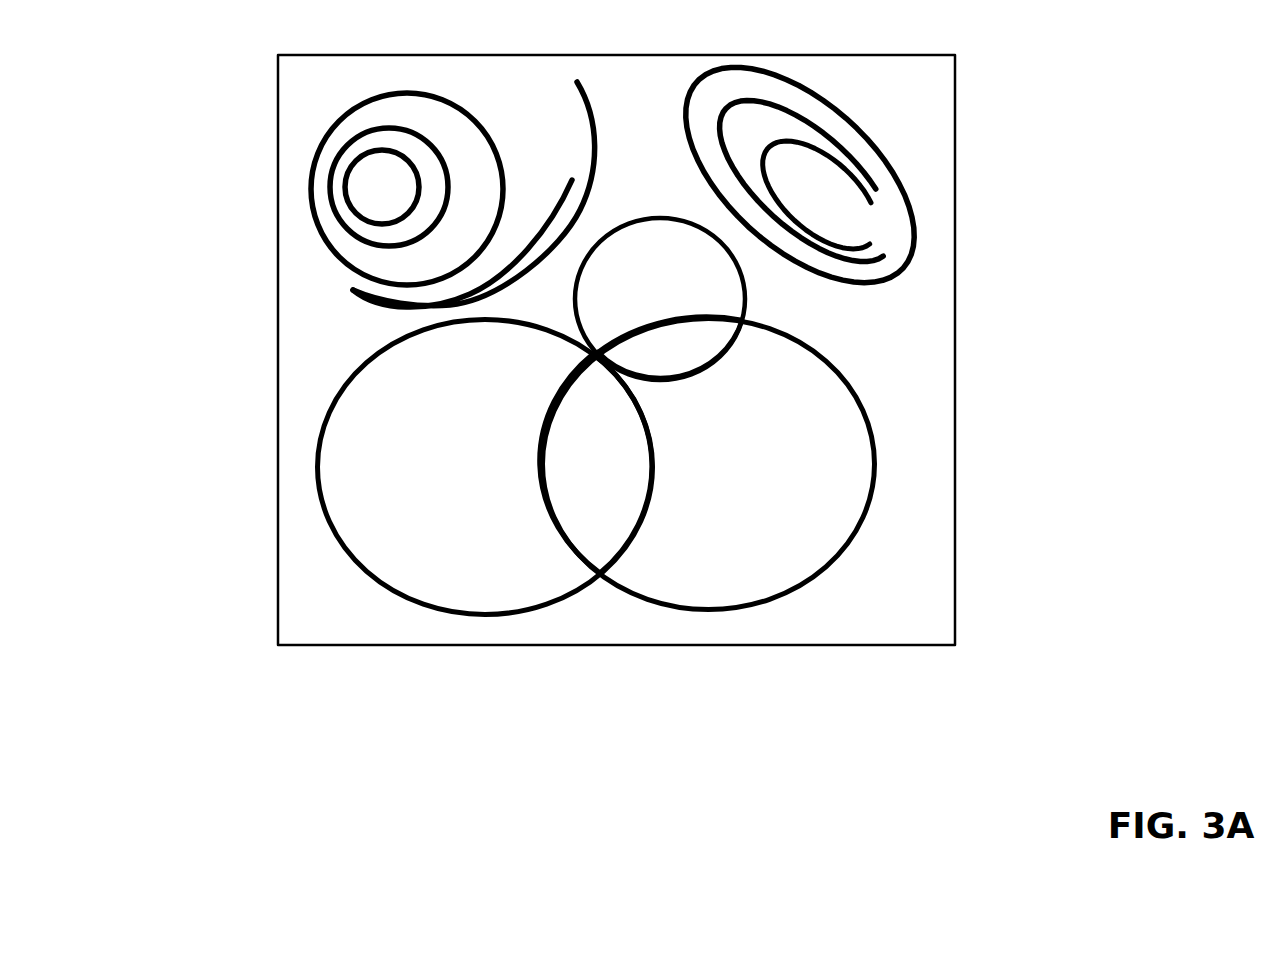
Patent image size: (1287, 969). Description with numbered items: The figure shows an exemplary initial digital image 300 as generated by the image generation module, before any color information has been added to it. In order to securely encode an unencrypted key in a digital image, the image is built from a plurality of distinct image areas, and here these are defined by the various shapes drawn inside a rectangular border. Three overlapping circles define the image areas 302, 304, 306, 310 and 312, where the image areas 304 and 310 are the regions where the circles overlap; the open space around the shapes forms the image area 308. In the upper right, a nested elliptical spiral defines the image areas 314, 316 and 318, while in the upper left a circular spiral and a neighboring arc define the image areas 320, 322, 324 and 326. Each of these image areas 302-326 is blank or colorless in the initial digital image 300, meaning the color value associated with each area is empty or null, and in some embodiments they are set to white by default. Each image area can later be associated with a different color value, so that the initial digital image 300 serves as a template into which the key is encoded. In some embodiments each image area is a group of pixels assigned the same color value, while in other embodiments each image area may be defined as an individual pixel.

The initial digital image 300 is at (49, 819).
The image area 302 is at (394, 482).
The image area 304 is at (571, 482).
The image area 306 is at (739, 482).
The image area 308 is at (864, 607).
The image area 310 is at (644, 367).
The image area 312 is at (620, 289).
The image area 314 is at (836, 237).
The image area 316 is at (770, 135).
The image area 318 is at (710, 101).
The image area 320 is at (573, 190).
The image area 322 is at (357, 206).
The image area 324 is at (427, 222).
The image area 326 is at (437, 123).